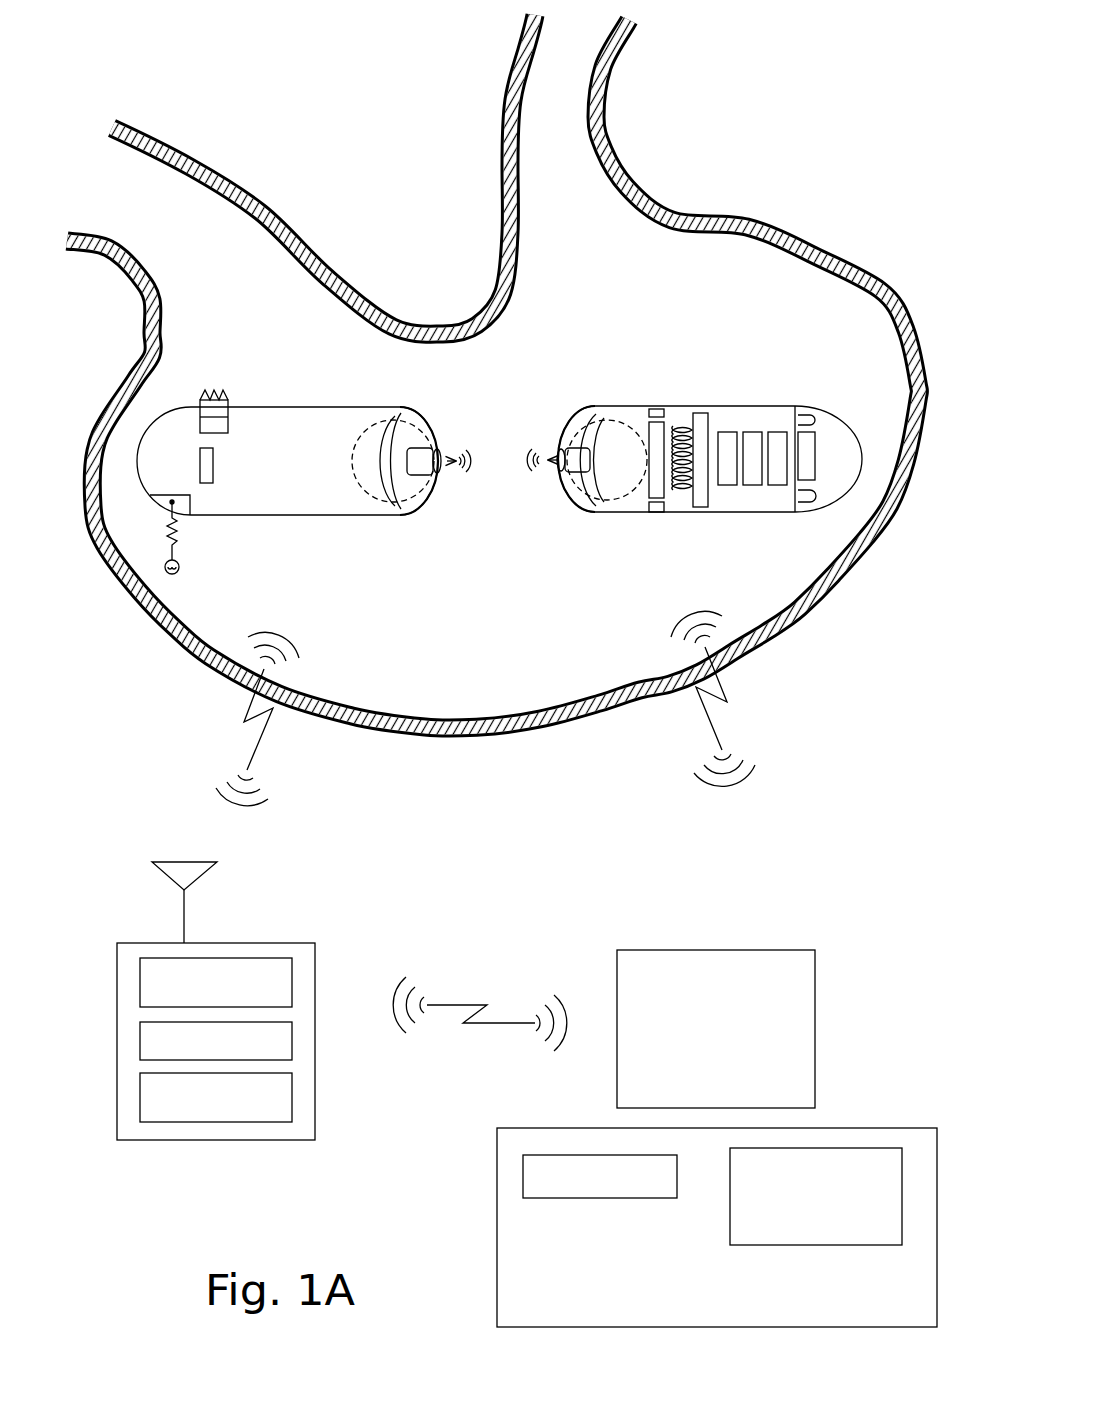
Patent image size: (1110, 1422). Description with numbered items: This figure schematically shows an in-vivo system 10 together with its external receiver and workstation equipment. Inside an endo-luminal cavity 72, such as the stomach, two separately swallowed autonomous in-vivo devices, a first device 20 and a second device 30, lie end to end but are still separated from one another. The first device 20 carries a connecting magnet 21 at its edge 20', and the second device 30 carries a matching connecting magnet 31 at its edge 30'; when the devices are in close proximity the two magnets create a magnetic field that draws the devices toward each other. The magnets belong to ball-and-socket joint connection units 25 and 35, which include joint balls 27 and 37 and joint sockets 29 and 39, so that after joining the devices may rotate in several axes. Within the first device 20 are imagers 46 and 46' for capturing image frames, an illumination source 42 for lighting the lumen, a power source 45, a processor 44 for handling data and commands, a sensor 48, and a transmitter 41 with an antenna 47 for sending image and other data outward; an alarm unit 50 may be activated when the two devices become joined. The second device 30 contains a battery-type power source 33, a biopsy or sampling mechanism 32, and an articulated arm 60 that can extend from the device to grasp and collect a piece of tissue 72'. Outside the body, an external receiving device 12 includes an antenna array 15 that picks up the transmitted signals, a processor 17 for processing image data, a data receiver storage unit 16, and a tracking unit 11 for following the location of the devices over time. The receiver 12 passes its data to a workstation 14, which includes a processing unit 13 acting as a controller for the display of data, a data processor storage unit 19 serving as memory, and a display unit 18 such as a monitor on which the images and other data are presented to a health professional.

The system 10 is at (313, 120).
The tracking unit 11 is at (292, 1040).
The external receiving device 12 is at (333, 973).
The processing unit 13 is at (822, 1245).
The workstation 14 is at (862, 990).
The antenna array 15 is at (200, 875).
The data receiver storage unit 16 is at (292, 1095).
The processor 17 is at (140, 983).
The display unit 18 is at (685, 950).
The data processor storage unit 19 is at (613, 1198).
The autonomous in-vivo device 20 is at (710, 396).
The edge of device 20' is at (576, 433).
The connecting magnet 21 is at (560, 470).
The ball-and-socket joint connection unit 25 is at (548, 423).
The joint ball 27 is at (578, 485).
The joint socket 29 is at (600, 490).
The autonomous in-vivo device 30 is at (287, 403).
The edge of device 30' is at (389, 442).
The connecting magnet 31 is at (230, 427).
The biopsy or sampling mechanism 32 is at (203, 400).
The power source 33 is at (213, 470).
The ball-and-socket joint connection unit 35 is at (439, 423).
The joint ball 37 is at (423, 483).
The joint socket 39 is at (392, 498).
The transmitter 41 is at (700, 413).
The illumination source 42 is at (815, 417).
The processor 44 is at (752, 432).
The power source 45 is at (778, 485).
The imager 46 is at (764, 477).
The imager 46' is at (634, 386).
The antenna 47 is at (683, 490).
The sensor 48 is at (727, 485).
The alarm unit 50 is at (647, 483).
The articulated arm 60 is at (172, 535).
The endo-luminal cavity 72 is at (214, 714).
The piece of tissue 72' is at (777, 680).